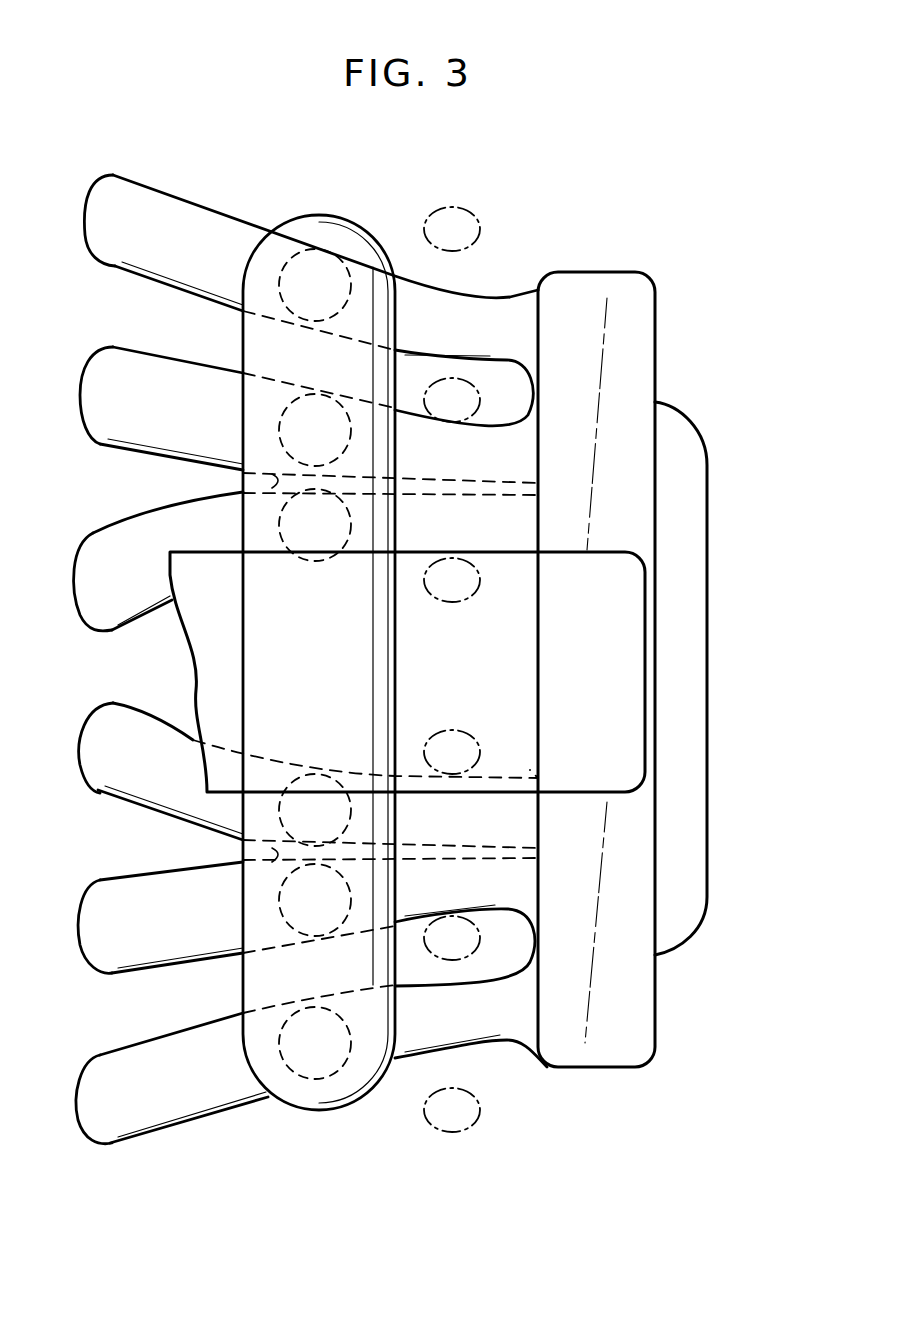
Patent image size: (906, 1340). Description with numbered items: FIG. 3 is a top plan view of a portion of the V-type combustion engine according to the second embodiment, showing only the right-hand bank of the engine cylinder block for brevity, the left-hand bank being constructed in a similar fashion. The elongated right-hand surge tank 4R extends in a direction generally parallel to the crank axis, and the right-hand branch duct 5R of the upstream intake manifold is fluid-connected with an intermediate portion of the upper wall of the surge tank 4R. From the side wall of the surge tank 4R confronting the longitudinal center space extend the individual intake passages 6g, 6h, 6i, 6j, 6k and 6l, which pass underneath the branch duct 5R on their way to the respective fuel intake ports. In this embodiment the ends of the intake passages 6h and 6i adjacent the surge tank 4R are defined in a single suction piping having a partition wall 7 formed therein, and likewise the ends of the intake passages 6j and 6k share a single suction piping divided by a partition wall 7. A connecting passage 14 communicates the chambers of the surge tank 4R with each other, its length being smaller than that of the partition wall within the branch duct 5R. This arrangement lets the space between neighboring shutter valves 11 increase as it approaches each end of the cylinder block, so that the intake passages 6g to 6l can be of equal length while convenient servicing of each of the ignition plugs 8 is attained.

The right-hand surge tank 4R is at (658, 382).
The right-hand branch duct 5R is at (622, 655).
The connecting passage 14 is at (709, 810).
The intake passage 6l is at (197, 218).
The intake passage 6k is at (170, 377).
The intake passage 6j is at (112, 545).
The intake passage 6i is at (115, 783).
The intake passage 6h is at (122, 953).
The intake passage 6g is at (143, 1115).
The partition wall 7 is at (500, 481).
The ignition plug 8 is at (480, 229).
The shutter valve 11 is at (342, 264).